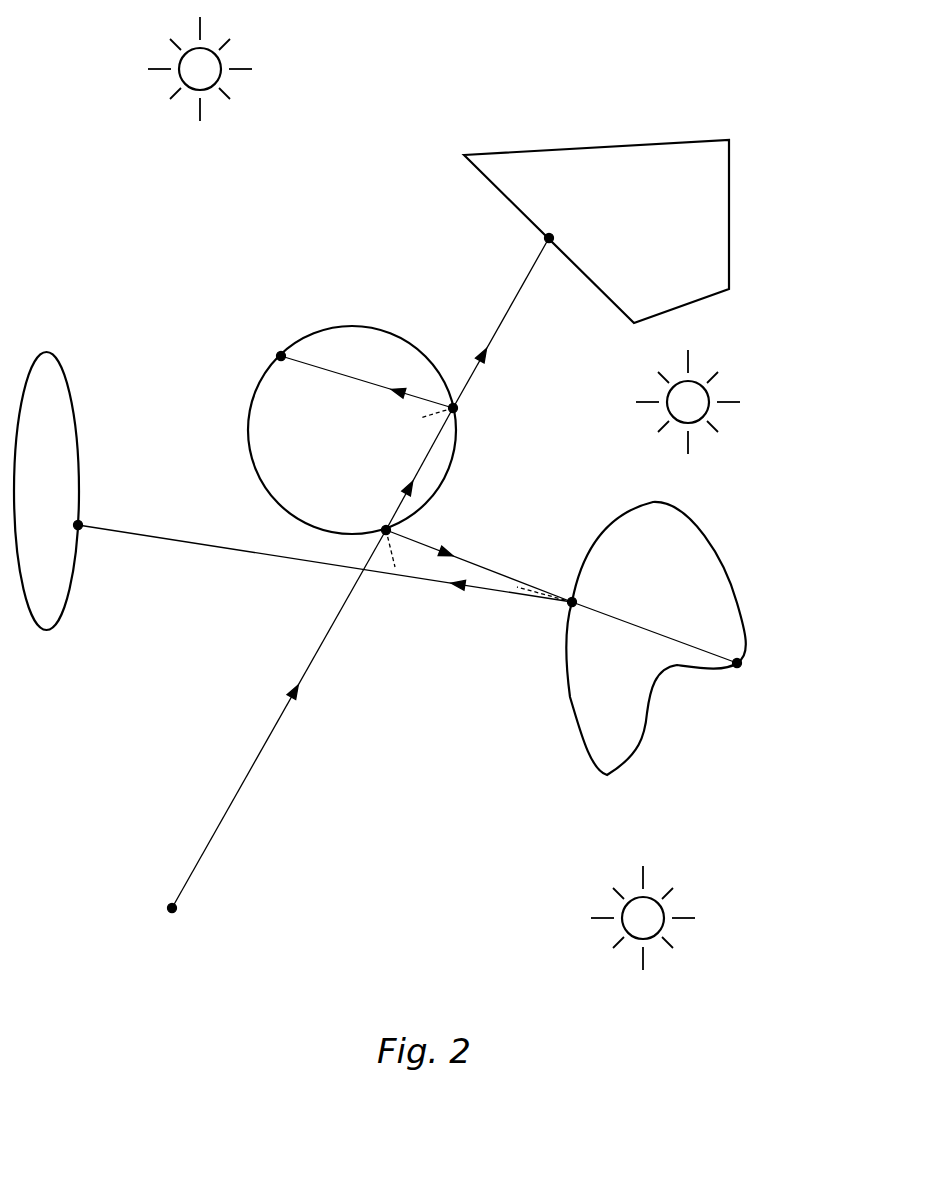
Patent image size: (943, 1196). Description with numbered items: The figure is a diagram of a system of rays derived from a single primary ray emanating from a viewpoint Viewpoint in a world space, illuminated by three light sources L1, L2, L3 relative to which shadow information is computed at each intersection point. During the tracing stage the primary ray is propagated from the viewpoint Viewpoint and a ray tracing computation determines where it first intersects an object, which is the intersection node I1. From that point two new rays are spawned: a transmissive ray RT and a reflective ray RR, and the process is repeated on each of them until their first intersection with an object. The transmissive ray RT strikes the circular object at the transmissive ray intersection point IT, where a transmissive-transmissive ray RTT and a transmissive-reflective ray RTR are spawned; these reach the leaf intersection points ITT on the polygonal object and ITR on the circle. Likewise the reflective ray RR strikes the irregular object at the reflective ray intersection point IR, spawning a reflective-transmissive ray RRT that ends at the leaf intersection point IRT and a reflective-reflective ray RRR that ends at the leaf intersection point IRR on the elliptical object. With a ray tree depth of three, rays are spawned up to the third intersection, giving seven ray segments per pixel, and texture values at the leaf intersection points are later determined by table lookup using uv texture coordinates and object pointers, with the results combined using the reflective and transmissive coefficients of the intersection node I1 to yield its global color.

The light source L1 is at (154, 61).
The light source L2 is at (684, 940).
The light source L3 is at (736, 405).
The viewpoint Viewpoint is at (156, 921).
The intersection node I1 is at (374, 533).
The transmissive ray RT is at (419, 469).
The transmissive ray intersection point IT is at (453, 411).
The transmissive-transmissive ray RTT is at (501, 323).
The leaf intersection point I_T_T ITT is at (565, 232).
The transmissive-reflective ray RTR is at (367, 385).
The leaf intersection point I_T_R ITR is at (264, 342).
The reflective ray RR is at (479, 566).
The reflective ray intersection point IR is at (561, 592).
The reflective-transmissive ray RRT is at (654, 632).
The leaf intersection point I_R_T IRT is at (753, 677).
The reflective-reflective ray RRR is at (325, 563).
The leaf intersection point I_R_R IRR is at (97, 513).